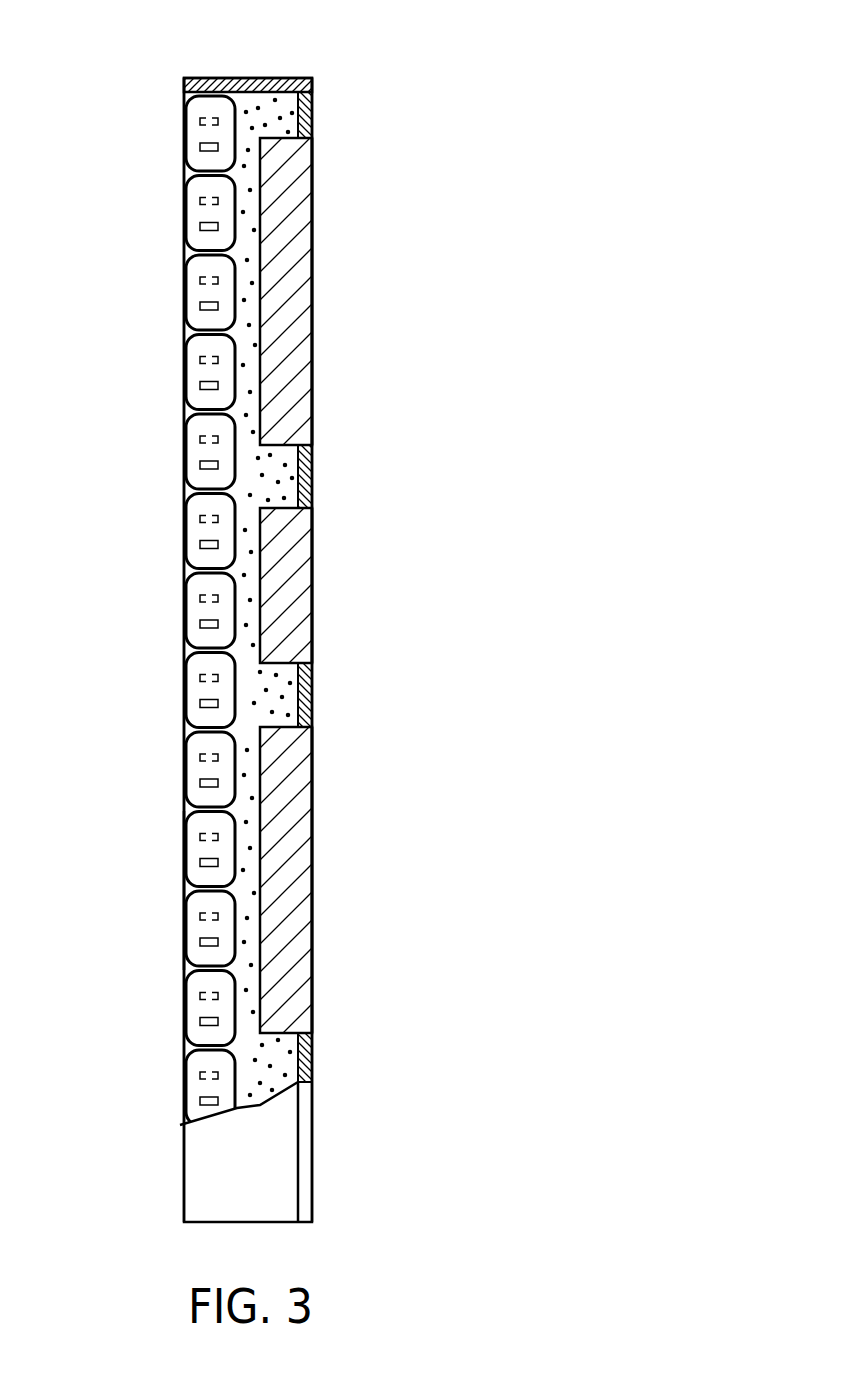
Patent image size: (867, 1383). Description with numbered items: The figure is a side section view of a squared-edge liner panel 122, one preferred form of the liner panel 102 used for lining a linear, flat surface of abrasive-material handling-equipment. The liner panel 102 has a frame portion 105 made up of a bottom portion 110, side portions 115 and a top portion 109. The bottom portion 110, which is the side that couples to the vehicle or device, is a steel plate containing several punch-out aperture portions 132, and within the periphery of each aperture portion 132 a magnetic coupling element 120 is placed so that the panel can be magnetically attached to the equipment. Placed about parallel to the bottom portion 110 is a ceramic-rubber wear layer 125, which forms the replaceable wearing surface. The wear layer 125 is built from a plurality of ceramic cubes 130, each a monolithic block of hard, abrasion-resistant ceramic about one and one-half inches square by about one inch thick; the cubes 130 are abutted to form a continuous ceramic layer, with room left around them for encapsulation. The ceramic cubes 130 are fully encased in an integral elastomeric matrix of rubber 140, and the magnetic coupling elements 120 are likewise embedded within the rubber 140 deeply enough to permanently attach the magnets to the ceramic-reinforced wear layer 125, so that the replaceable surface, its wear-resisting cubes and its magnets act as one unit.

The liner panel 102 is at (366, 148).
The frame portion 105 is at (330, 66).
The top portion 109 is at (165, 798).
The bottom portion 110 is at (305, 471).
The side portion 115 is at (272, 78).
The magnetic coupling element 120 is at (313, 356).
The squared-edge liner panel 122 is at (552, 263).
The ceramic-rubber wear layer 125 is at (183, 891).
The ceramic cube 130 is at (188, 354).
The punch-out aperture portion 132 is at (382, 226).
The rubber 140 is at (243, 170).